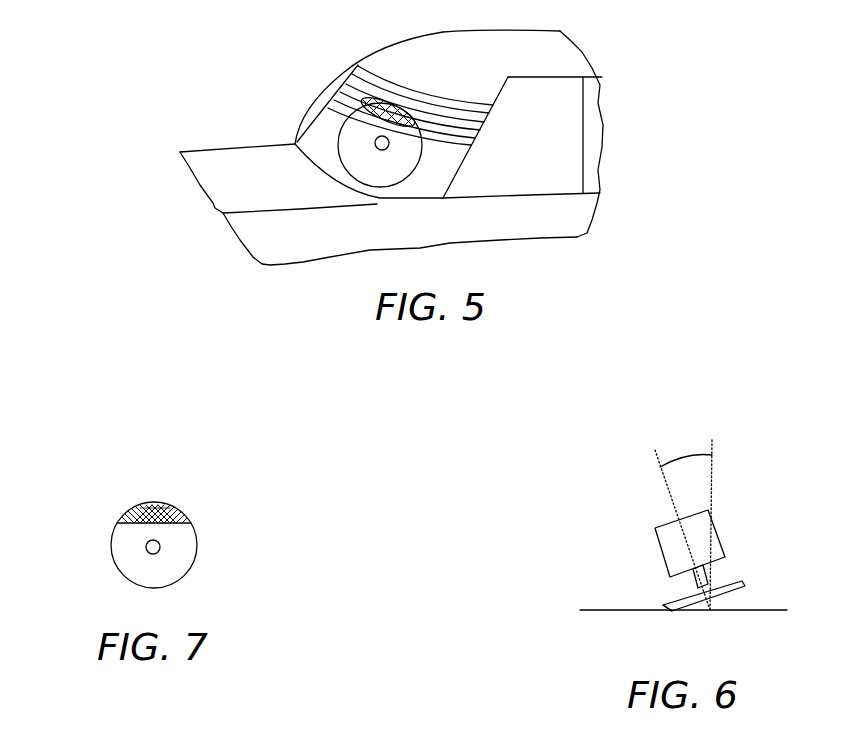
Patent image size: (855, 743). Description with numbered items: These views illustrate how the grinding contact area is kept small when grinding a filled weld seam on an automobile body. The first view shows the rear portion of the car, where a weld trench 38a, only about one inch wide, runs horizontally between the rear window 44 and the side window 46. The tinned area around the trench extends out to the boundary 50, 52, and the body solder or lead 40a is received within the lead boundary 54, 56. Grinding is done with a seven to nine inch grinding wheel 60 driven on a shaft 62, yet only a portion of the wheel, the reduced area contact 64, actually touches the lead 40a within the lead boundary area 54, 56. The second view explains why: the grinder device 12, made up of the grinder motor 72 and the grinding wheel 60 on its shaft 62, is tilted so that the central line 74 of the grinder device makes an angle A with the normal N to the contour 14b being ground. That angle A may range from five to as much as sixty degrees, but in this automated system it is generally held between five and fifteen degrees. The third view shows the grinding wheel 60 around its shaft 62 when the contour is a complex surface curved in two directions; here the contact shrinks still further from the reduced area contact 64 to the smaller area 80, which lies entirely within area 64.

In FIG. 6, the grinder device 12 is at (674, 571).
In FIG. 5, the contour 14b is at (384, 75).
In FIG. 6, the contour 14b is at (613, 612).
In FIG. 5, the weld trench 38a is at (352, 78).
In FIG. 5, the lead 40a is at (431, 118).
In FIG. 5, the rear window 44 is at (340, 78).
In FIG. 5, the side window 46 is at (573, 88).
In FIG. 5, the tinned area boundary 50 is at (427, 98).
In FIG. 5, the tinned area boundary 52 is at (453, 146).
In FIG. 5, the lead boundary 54 is at (453, 110).
In FIG. 5, the lead boundary 56 is at (470, 142).
In FIG. 5, the grinding wheel 60 is at (349, 140).
In FIG. 7, the grinding wheel 60 is at (117, 542).
In FIG. 6, the grinding wheel 60 is at (693, 593).
In FIG. 5, the shaft 62 is at (388, 149).
In FIG. 7, the shaft 62 is at (160, 544).
In FIG. 6, the shaft 62 is at (700, 577).
In FIG. 5, the reduced area contact 64 is at (390, 100).
In FIG. 7, the reduced area contact 64 is at (180, 520).
In FIG. 6, the reduced area contact 64 is at (670, 607).
In FIG. 6, the grinder motor 72 is at (660, 540).
In FIG. 6, the central line 74 is at (670, 497).
In FIG. 7, the smaller area 80 is at (155, 503).
In FIG. 6, the angle A is at (685, 455).
In FIG. 6, the normal N is at (712, 462).